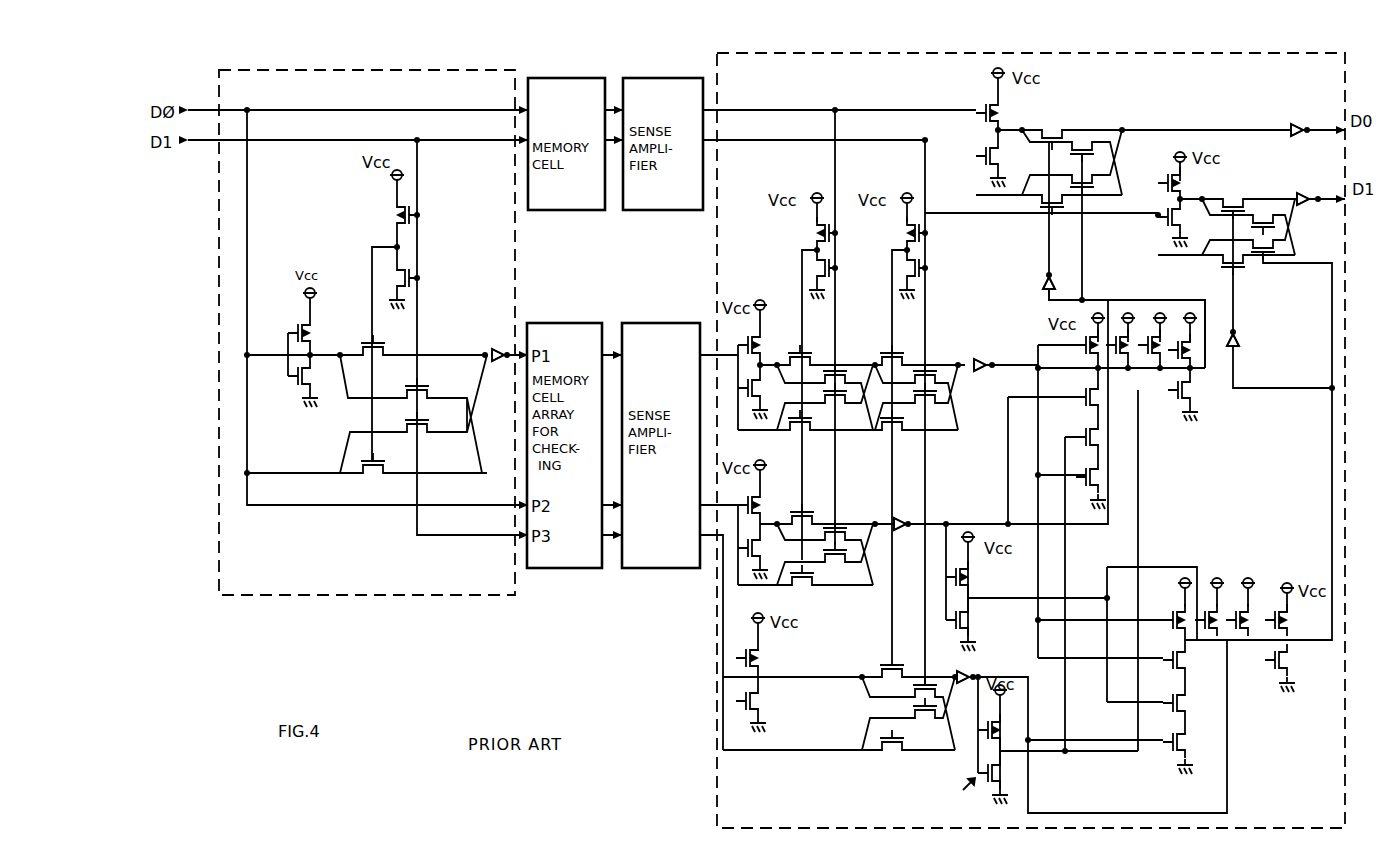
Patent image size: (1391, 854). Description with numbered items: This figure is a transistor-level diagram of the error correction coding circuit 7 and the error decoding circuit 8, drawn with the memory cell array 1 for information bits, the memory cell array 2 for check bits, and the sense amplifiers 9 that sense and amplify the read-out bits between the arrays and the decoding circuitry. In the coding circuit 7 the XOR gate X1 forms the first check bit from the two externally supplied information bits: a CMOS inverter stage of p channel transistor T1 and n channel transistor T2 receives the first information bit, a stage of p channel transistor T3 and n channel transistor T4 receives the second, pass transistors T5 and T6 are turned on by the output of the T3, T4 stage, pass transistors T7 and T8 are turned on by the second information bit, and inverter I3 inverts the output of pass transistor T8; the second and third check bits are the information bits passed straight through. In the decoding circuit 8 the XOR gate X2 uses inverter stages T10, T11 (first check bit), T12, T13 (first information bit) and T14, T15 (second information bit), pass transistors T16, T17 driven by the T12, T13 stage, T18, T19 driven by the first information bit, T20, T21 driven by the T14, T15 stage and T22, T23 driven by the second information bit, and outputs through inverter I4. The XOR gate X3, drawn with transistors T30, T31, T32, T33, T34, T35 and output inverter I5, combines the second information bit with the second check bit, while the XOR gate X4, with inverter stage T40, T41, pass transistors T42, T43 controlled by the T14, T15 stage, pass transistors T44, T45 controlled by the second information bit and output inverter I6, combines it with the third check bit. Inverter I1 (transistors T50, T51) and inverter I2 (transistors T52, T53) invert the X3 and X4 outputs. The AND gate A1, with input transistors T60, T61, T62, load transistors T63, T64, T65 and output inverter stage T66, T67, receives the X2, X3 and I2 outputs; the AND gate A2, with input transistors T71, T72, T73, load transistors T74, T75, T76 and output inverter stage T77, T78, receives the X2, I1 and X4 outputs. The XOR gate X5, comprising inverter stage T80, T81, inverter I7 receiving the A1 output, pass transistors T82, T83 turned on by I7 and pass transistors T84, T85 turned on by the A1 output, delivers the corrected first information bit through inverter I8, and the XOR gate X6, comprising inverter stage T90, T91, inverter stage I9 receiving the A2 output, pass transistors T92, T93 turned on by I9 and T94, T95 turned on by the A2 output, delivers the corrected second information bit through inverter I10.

The memory cell array 1 is at (553, 78).
The memory cell array for checking 2 is at (545, 323).
The error correction coding circuit 7 is at (512, 595).
The error decoding circuit 8 is at (714, 804).
The sense amplifiers 9 is at (650, 323).
The p channel MOS transistor T1 is at (315, 333).
The n channel MOS transistor T2 is at (315, 376).
The p channel MOS transistor T3 is at (387, 215).
The n channel MOS transistor T4 is at (393, 278).
The pass transistor T5 is at (378, 354).
The pass transistor T6 is at (383, 463).
The pass transistor T7 is at (428, 388).
The pass transistor T8 is at (428, 421).
The transistor T10 is at (769, 345).
The transistor T11 is at (768, 388).
The transistor T12 is at (805, 233).
The transistor T13 is at (799, 268).
The transistor T14 is at (895, 233).
The transistor T15 is at (893, 268).
The pass transistor T16 is at (811, 348).
The pass transistor T17 is at (790, 433).
The pass transistor T18 is at (846, 365).
The pass transistor T19 is at (845, 419).
The pass transistor T20 is at (879, 348).
The pass transistor T21 is at (901, 433).
The pass transistor T22 is at (935, 365).
The pass transistor T23 is at (938, 419).
The transistor T30 is at (765, 503).
The transistor T31 is at (755, 548).
The transistor T32 is at (809, 506).
The transistor T33 is at (802, 587).
The transistor T34 is at (848, 521).
The transistor T35 is at (834, 563).
The transistor T40 is at (767, 658).
The transistor T41 is at (767, 701).
The pass transistor T42 is at (883, 666).
The pass transistor T43 is at (889, 754).
The pass transistor T44 is at (934, 674).
The pass transistor T45 is at (923, 722).
The transistor T50 is at (980, 577).
The transistor T51 is at (979, 620).
The transistor T52 is at (1010, 727).
The transistor T53 is at (1005, 773).
The input transistor T60 is at (1073, 397).
The input transistor T61 is at (1072, 437).
The input transistor T62 is at (1102, 478).
The load transistor T63 is at (1099, 321).
The load transistor T64 is at (1129, 321).
The load transistor T65 is at (1164, 321).
The MOS transistor T66 is at (1198, 352).
The MOS transistor T67 is at (1193, 391).
The input transistor T71 is at (1191, 660).
The input transistor T72 is at (1191, 703).
The input transistor T73 is at (1191, 742).
The load transistor T74 is at (1183, 630).
The load transistor T75 is at (1222, 610).
The load transistor T76 is at (1256, 612).
The transistor T77 is at (1292, 620).
The transistor T78 is at (1293, 660).
The transistor T80 is at (1008, 113).
The transistor T81 is at (1004, 156).
The pass transistor T82 is at (1056, 130).
The pass transistor T83 is at (1025, 206).
The pass transistor T84 is at (1085, 148).
The pass transistor T85 is at (1094, 186).
The transistor T90 is at (1192, 183).
The transistor T91 is at (1186, 217).
The pass transistor T92 is at (1241, 195).
The pass transistor T93 is at (1219, 267).
The pass transistor T94 is at (1265, 216).
The pass transistor T95 is at (1282, 245).
The inverter I1 is at (985, 603).
The inverter I2 is at (971, 782).
The inverter I3 is at (494, 349).
The inverter I4 is at (980, 358).
The inverter I5 is at (906, 510).
The inverter I6 is at (966, 671).
The inverter I7 is at (1035, 283).
The inverter I8 is at (1294, 119).
The inverter stage I9 is at (1242, 344).
The inverter I10 is at (1307, 188).
The XOR gate X1 is at (413, 335).
The XOR gate X2 is at (862, 340).
The XOR gate X3 is at (827, 504).
The XOR gate X4 is at (840, 664).
The XOR gate X5 is at (1060, 109).
The XOR gate X6 is at (1238, 250).
The AND gate A1 is at (1127, 381).
The AND gate A2 is at (1258, 698).